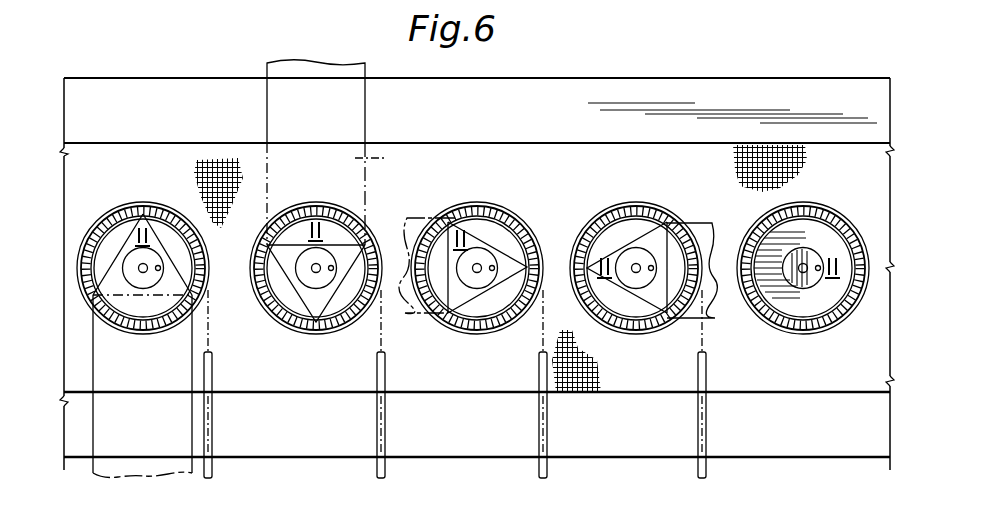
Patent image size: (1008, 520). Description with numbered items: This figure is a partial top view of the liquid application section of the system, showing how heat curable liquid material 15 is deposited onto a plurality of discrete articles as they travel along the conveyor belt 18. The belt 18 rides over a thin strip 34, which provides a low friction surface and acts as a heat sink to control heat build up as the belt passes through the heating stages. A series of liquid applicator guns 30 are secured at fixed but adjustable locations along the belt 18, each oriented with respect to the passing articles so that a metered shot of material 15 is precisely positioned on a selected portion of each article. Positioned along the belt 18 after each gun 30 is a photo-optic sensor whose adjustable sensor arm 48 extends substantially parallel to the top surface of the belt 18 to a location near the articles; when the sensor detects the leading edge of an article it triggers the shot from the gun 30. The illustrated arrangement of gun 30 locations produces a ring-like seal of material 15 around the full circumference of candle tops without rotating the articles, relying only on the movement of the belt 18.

The heat curable liquid material 15 is at (113, 212).
The conveyor belt 18 is at (863, 181).
The liquid applicator gun 30 is at (105, 355).
The strip 34 is at (810, 434).
The sensor arm 48 is at (212, 378).